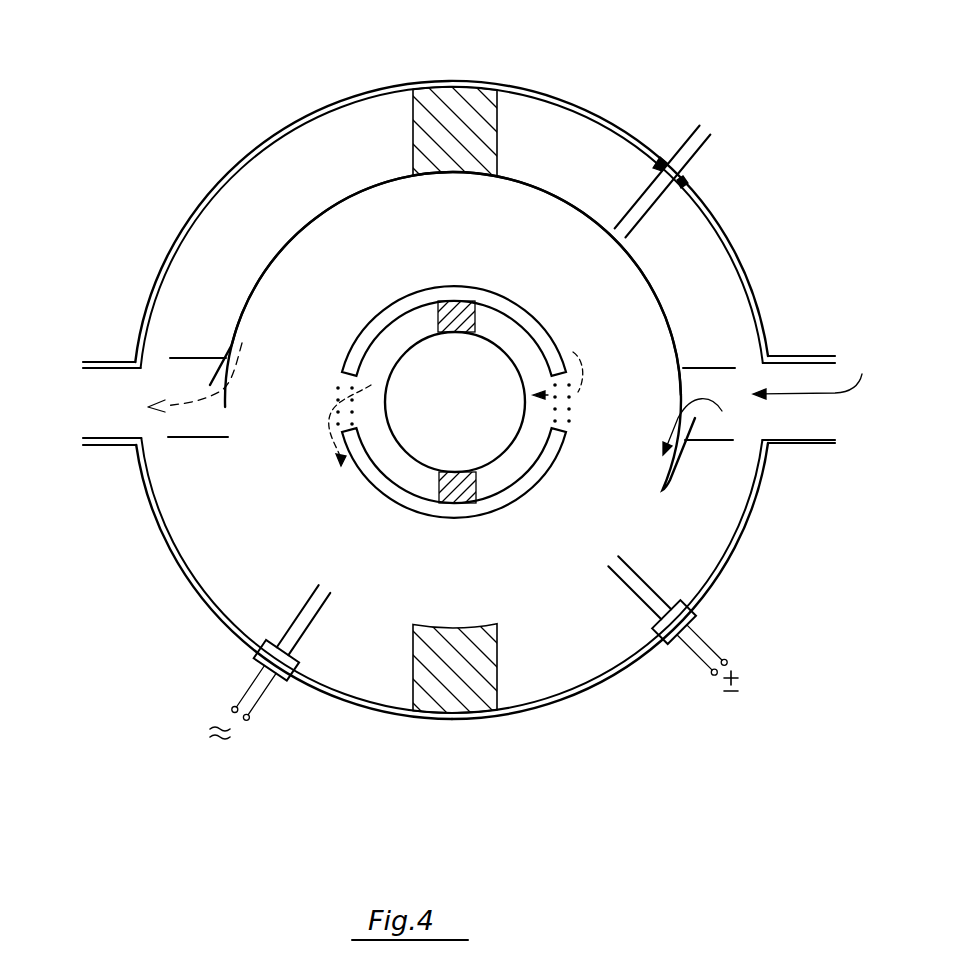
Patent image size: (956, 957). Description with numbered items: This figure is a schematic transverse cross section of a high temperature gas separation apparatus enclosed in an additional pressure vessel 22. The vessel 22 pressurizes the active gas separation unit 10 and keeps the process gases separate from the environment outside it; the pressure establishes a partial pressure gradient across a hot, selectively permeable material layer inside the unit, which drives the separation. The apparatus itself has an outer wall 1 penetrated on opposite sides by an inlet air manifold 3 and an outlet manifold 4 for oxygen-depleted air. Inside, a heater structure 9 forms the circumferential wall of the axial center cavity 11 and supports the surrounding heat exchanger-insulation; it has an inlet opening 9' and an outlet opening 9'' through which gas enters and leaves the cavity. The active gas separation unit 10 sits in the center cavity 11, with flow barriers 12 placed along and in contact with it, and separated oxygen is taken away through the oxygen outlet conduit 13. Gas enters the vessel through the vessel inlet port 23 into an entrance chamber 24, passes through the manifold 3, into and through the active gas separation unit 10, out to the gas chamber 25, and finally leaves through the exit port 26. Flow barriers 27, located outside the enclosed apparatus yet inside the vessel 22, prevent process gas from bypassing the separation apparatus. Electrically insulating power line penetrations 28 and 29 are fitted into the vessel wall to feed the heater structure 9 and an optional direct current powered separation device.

The outer wall 1 is at (308, 225).
The inlet air manifold 3 is at (701, 383).
The outlet manifold 4 is at (202, 420).
The heater structure 9 is at (467, 331).
The inlet opening 9' is at (576, 396).
The outlet opening 9'' is at (332, 419).
The active gas separation unit 10 is at (467, 383).
The axial center cavity 11 is at (513, 468).
The flow barrier 12 is at (463, 304).
The oxygen outlet conduit 13 is at (693, 148).
The vessel 22 is at (207, 203).
The vessel inlet port 23 is at (828, 425).
The entrance chamber 24 is at (710, 522).
The gas chamber 25 is at (212, 547).
The exit port 26 is at (83, 430).
The flow barrier 27 is at (466, 116).
The power line penetration 28 is at (278, 662).
The power line penetration 29 is at (677, 627).